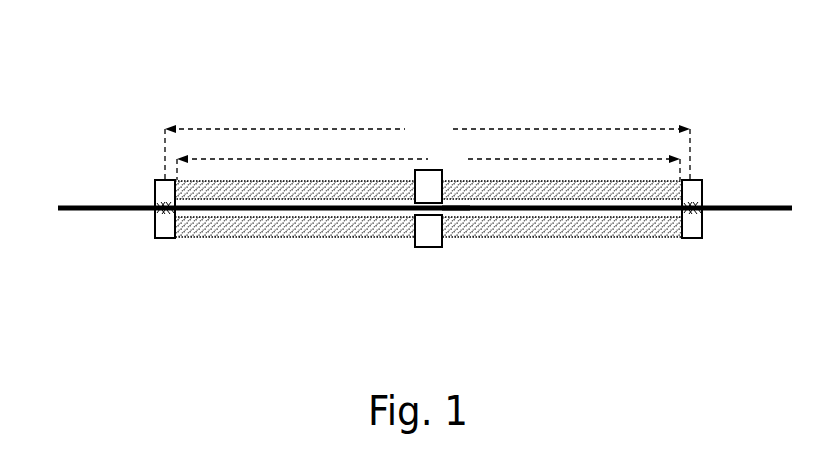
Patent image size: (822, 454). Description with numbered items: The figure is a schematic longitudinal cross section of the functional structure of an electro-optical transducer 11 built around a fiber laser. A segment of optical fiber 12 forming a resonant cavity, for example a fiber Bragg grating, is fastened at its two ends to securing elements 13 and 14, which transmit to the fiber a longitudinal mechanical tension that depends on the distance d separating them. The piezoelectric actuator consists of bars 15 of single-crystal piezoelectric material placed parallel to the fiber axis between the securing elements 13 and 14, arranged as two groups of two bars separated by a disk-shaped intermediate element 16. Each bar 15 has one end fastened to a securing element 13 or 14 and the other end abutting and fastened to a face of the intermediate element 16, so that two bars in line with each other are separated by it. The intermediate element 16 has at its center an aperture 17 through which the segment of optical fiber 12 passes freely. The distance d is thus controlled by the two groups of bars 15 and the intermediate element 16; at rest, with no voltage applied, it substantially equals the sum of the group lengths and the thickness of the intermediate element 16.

The electro-optical transducer 11 is at (122, 84).
The segment of optical fiber 12 is at (425, 264).
The securing element 13 is at (118, 195).
The securing element 14 is at (727, 190).
The bars 15 is at (428, 207).
The intermediate element 16 is at (402, 247).
The aperture 17 is at (459, 220).